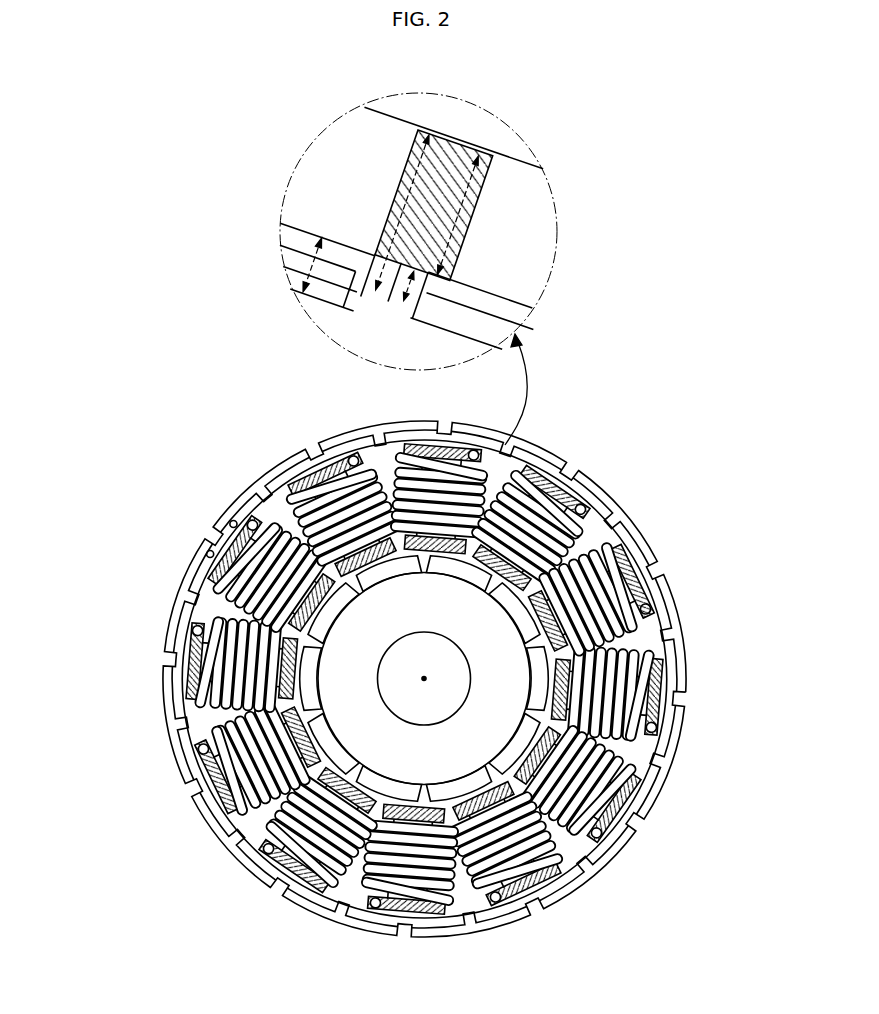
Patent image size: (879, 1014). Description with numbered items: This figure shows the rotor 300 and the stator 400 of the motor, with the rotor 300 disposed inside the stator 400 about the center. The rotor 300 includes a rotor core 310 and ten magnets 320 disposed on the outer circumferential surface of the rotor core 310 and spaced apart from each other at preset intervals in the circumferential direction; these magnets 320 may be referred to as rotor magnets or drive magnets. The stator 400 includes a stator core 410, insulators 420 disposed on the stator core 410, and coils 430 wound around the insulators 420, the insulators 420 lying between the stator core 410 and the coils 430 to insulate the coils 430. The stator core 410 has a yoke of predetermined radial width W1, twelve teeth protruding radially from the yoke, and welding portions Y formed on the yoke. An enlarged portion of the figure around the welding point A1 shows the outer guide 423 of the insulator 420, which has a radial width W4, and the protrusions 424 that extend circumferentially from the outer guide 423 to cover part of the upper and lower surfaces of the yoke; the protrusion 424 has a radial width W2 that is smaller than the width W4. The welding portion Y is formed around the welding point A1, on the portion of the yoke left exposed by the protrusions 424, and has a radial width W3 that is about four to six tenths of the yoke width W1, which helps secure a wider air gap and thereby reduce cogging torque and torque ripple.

The rotor 300 is at (564, 679).
The rotor core 310 is at (500, 695).
The magnets 320 is at (520, 615).
The stator 400 is at (354, 679).
The stator core 410 is at (173, 698).
The insulators 420 is at (181, 647).
The coils 430 is at (182, 604).
The outer guide 423 is at (333, 288).
The protrusions 424 is at (390, 300).
The welding point A1 is at (430, 253).
The width of the yoke W1 is at (383, 192).
The width of the protrusion W2 is at (420, 289).
The width of the welding portion W3 is at (483, 207).
The width of the outer guide W4 is at (300, 272).
The welding portion Y is at (483, 174).